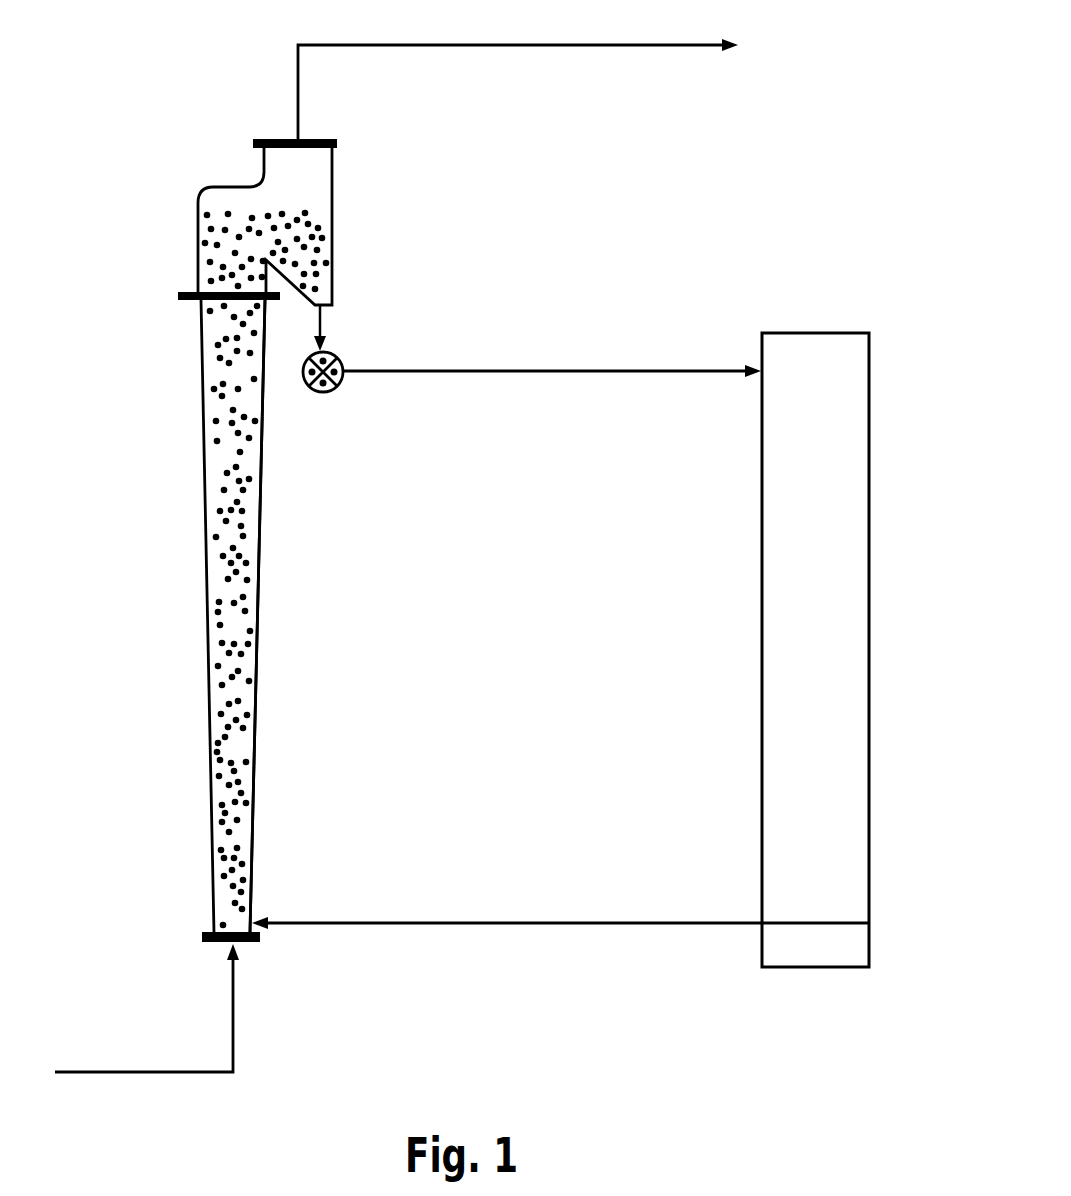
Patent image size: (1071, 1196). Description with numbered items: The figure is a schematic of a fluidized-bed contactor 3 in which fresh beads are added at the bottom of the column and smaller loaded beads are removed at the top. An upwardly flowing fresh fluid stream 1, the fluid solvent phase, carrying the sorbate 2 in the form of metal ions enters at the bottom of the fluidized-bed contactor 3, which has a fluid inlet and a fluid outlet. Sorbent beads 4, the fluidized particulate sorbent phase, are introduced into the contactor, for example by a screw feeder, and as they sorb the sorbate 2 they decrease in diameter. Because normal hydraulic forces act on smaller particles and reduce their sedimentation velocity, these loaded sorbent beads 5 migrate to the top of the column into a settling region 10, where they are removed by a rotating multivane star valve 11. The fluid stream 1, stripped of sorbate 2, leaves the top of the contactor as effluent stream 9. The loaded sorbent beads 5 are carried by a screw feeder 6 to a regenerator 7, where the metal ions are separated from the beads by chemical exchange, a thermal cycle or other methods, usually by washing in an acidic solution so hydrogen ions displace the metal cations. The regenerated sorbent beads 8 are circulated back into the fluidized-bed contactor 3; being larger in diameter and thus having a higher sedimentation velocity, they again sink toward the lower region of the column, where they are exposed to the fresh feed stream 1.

The fresh fluid stream 1 is at (147, 1008).
The sorbate 2 is at (212, 823).
The fluidized-bed contactor 3 is at (175, 653).
The sorbent beads 4 is at (247, 748).
The loaded sorbent beads 5 is at (260, 507).
The screw feeder 6 is at (552, 344).
The regenerator 7 is at (736, 653).
The regenerated sorbent beads 8 is at (560, 897).
The effluent stream 9 is at (518, 69).
The settling region 10 is at (362, 249).
The rotating multivane star valve 11 is at (342, 369).